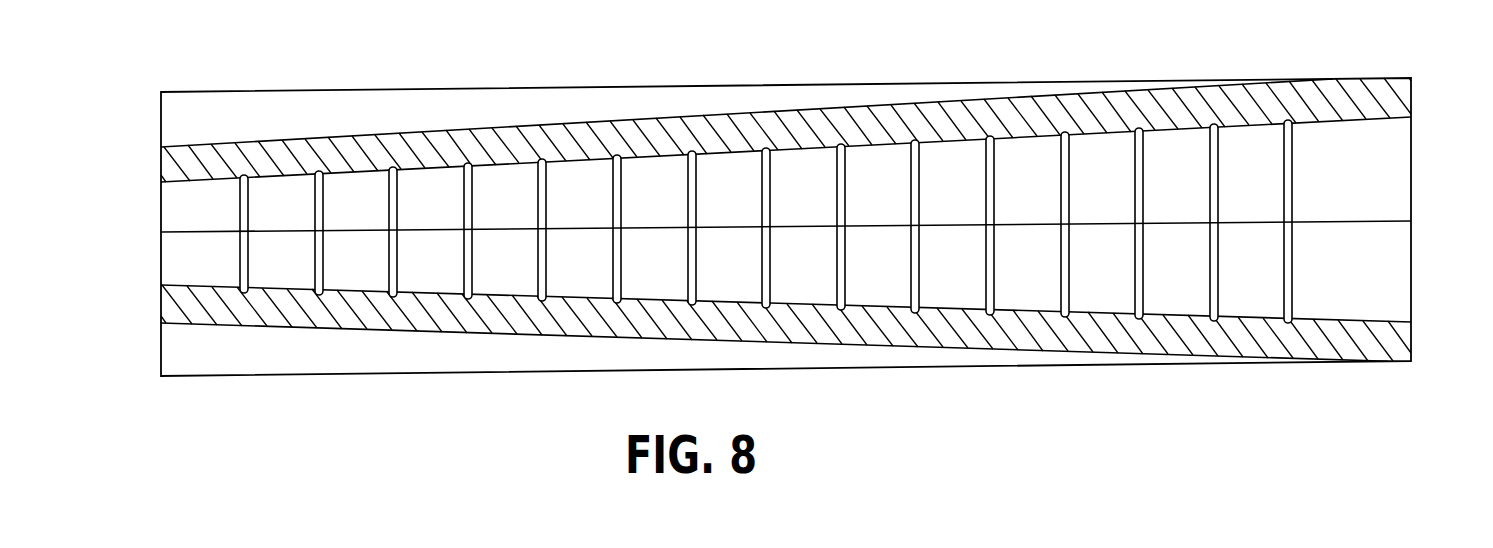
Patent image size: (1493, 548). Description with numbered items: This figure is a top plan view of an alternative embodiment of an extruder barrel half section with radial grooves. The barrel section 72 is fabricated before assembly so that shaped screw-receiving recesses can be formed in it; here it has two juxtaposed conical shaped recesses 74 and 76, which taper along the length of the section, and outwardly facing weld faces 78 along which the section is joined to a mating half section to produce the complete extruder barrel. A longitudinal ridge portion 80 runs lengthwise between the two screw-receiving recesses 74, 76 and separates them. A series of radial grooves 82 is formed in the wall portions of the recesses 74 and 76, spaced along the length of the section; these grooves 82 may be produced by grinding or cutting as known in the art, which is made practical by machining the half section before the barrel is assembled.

The barrel section 72 is at (588, 88).
The conical shaped recess 74 is at (1385, 158).
The conical shaped recess 76 is at (1385, 269).
The weld faces 78 is at (1072, 108).
The longitudinal ridge portion 80 is at (1411, 221).
The radial grooves 82 is at (238, 217).